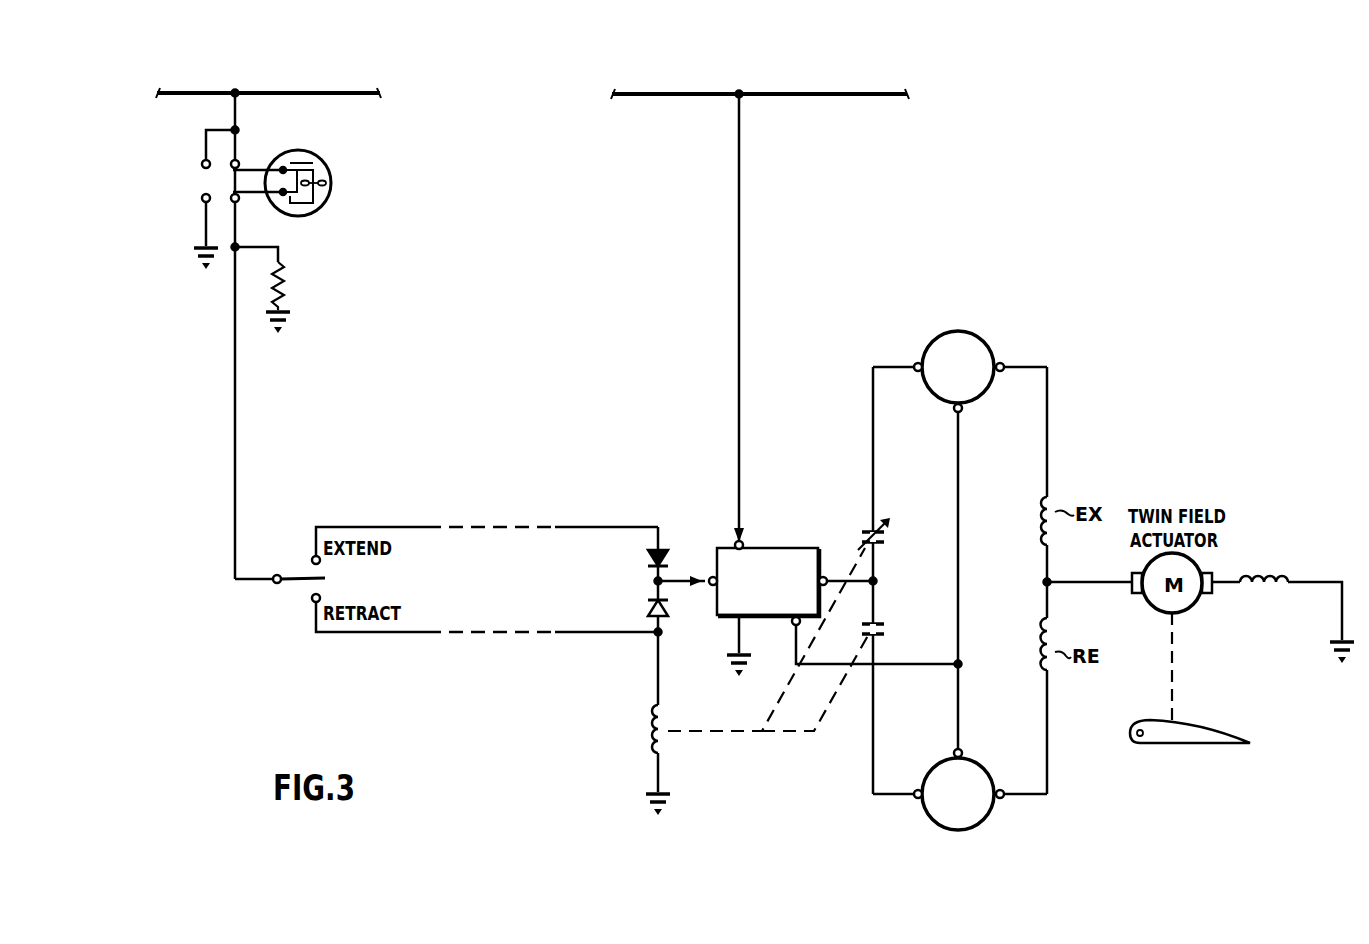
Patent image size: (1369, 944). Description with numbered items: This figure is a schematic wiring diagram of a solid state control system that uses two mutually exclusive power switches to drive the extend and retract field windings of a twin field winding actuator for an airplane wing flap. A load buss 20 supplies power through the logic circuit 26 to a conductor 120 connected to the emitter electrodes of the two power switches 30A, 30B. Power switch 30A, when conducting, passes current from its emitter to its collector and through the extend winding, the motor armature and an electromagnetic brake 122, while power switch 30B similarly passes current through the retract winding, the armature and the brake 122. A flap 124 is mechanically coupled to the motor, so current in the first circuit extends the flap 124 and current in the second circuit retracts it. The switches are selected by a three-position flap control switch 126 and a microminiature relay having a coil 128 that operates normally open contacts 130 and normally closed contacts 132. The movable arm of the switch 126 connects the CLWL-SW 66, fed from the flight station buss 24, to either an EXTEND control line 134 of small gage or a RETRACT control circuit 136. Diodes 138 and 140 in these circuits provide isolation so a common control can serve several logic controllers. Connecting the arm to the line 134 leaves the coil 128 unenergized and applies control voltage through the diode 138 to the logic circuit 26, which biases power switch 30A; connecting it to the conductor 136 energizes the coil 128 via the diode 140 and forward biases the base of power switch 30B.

The flight station buss 24 is at (345, 93).
The current limiting warning light switch (CLWL-SW) 66 is at (331, 183).
The load buss 20 is at (777, 94).
The logic circuit 26 is at (757, 548).
The flap control switch 126 is at (290, 585).
The EXTEND control line 134 is at (358, 526).
The RETRACT control circuit 136 is at (359, 633).
The diode 138 is at (650, 560).
The diode 140 is at (648, 606).
The relay coil 128 is at (653, 717).
The normally closed contacts 132 is at (880, 542).
The normally open contacts 130 is at (880, 632).
The conductor 120 is at (957, 704).
The power switch 30A is at (982, 340).
The power switch 30B is at (983, 822).
The electromagnetic brake 122 is at (1286, 577).
The flap 124 is at (1209, 743).